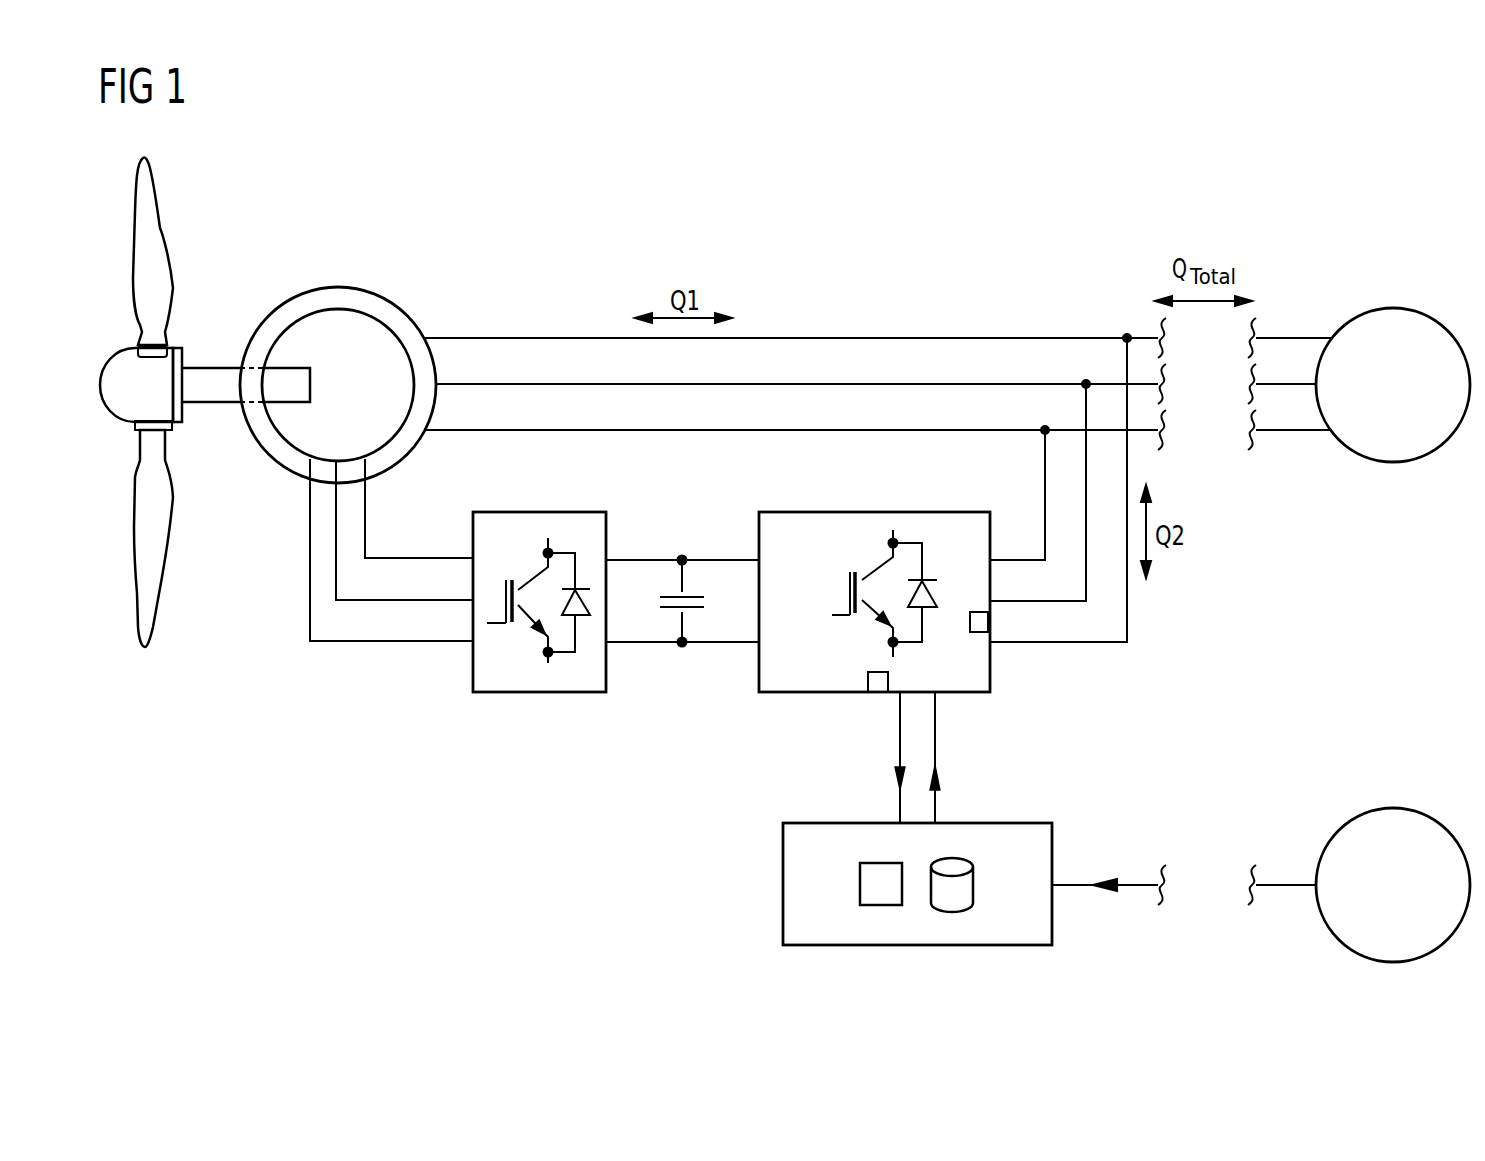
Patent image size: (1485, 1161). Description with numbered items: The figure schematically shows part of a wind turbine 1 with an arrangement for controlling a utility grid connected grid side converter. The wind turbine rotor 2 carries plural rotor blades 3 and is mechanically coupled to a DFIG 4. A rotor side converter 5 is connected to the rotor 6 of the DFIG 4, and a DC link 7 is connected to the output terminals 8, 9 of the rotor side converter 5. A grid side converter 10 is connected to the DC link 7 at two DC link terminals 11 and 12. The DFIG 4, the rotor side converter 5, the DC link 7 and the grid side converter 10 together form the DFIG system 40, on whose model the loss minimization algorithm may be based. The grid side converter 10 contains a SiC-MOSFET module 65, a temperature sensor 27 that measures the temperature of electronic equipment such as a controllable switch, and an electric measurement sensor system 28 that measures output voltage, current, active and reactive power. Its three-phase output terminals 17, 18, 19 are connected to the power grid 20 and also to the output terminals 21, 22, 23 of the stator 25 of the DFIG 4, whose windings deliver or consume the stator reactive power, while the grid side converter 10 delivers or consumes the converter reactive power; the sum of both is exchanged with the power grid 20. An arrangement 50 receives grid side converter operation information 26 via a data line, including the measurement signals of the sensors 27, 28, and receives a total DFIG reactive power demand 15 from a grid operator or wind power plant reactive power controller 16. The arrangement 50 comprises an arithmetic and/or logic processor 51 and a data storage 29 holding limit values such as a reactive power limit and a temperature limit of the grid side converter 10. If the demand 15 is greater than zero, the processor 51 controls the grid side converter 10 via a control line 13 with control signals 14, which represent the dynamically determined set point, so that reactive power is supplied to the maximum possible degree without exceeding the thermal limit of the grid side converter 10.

The wind turbine 1 is at (1208, 190).
The wind turbine rotor 2 is at (211, 366).
The rotor blades 3 is at (167, 231).
The DFIG 4 is at (338, 316).
The rotor side converter 5 is at (540, 511).
The rotor of the DFIG 6 is at (298, 316).
The DC link 7 is at (690, 528).
The output terminal of the rotor side converter 8 is at (618, 556).
The output terminal of the rotor side converter 9 is at (618, 646).
The grid side converter 10 is at (874, 568).
The DC link terminal 11 is at (758, 555).
The DC link terminal 12 is at (758, 648).
The control line 13 is at (935, 725).
The control signals 14 is at (935, 767).
The total DFIG reactive power demand 15 is at (1093, 882).
The grid operator or wind power plant reactive power controller 16 is at (1393, 807).
The output terminal of the grid side converter 17 is at (990, 553).
The output terminal of the grid side converter 18 is at (990, 600).
The output terminal of the grid side converter 19 is at (990, 636).
The power grid 20 is at (1392, 307).
The stator output terminal 21 is at (423, 334).
The stator output terminal 22 is at (440, 380).
The stator output terminal 23 is at (421, 437).
The stator of the DFIG 25 is at (375, 289).
The grid side converter operation information 26 is at (900, 790).
The temperature sensor 27 is at (868, 682).
The electric measurement sensor system 28 is at (983, 610).
The data storage 29 is at (973, 887).
The DFIG system 40 is at (735, 218).
The arrangement for controlling the grid side converter 50 is at (885, 884).
The arithmetic and/or logic processor 51 is at (860, 887).
The SiC-MOSFET module 65 is at (828, 570).